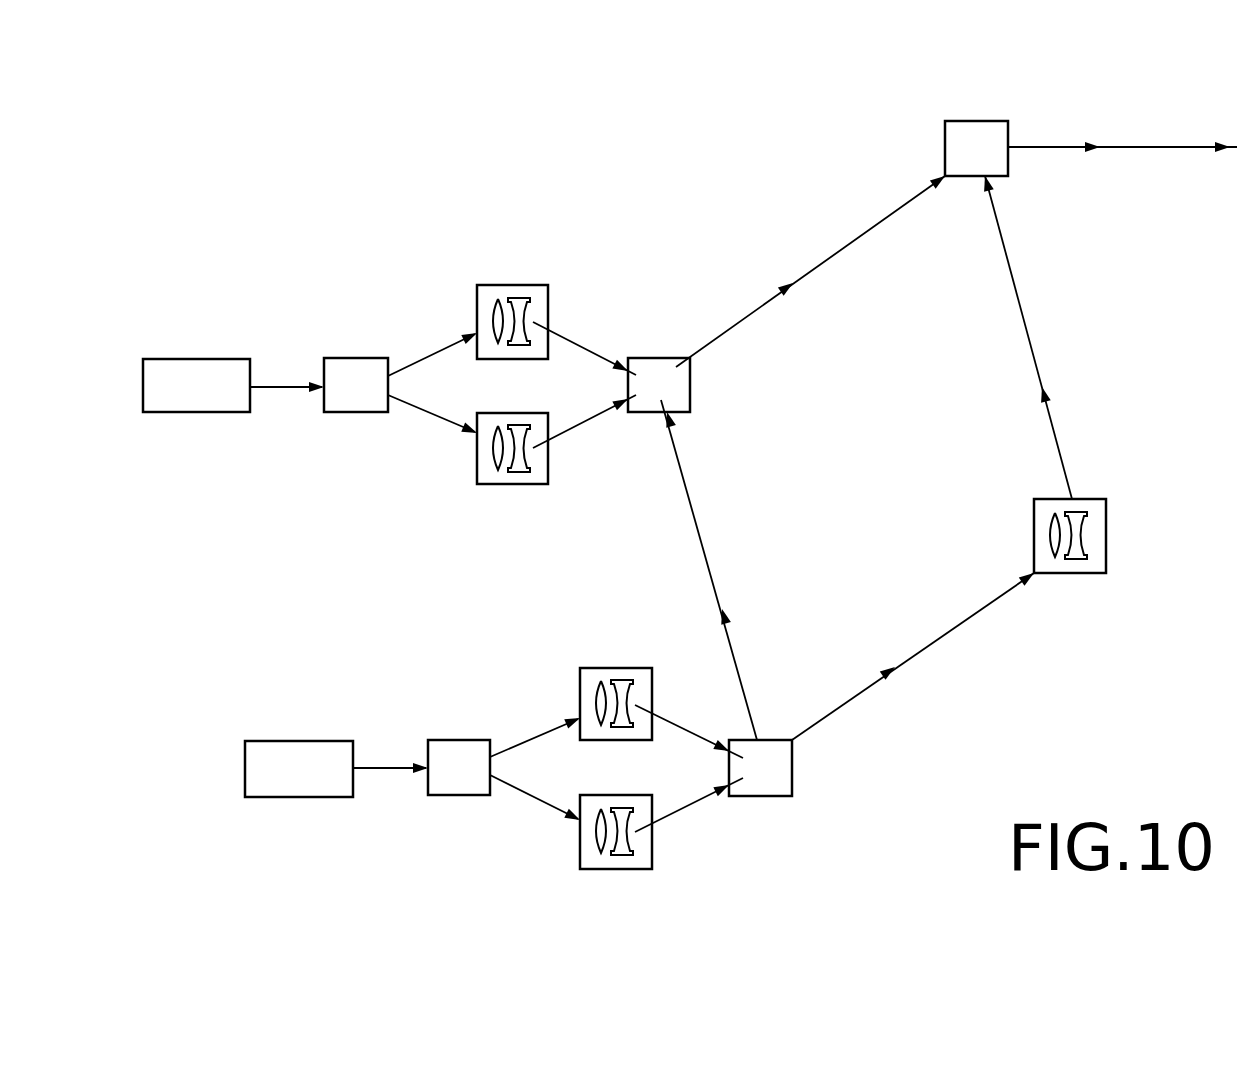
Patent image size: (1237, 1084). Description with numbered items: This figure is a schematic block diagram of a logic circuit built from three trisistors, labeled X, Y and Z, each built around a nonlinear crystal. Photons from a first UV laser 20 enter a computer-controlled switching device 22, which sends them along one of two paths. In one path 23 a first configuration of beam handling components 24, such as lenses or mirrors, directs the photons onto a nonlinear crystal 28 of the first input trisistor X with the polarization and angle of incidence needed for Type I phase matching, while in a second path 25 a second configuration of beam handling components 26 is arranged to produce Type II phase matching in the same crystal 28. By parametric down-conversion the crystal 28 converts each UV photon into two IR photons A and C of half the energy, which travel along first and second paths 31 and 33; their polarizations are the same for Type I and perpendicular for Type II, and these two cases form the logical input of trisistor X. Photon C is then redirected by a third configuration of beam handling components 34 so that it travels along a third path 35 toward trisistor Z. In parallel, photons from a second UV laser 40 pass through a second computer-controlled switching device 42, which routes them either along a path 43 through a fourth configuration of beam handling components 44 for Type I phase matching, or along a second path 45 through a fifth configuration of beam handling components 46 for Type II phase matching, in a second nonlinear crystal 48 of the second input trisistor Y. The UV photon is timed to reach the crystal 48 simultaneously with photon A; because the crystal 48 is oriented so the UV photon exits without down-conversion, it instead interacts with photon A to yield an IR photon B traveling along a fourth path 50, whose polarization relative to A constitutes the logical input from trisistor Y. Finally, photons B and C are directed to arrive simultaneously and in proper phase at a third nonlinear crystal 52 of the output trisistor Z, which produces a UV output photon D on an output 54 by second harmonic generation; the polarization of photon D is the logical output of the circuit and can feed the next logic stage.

The first UV laser 20 is at (300, 797).
The computer-controlled switching device 22 is at (458, 795).
The first path 23 is at (540, 733).
The first configuration of beam handling components 24 is at (620, 668).
The second path 25 is at (535, 798).
The second configuration of beam handling components 26 is at (618, 869).
The nonlinear crystal 28 is at (765, 796).
The first path 31 is at (705, 552).
The second path 33 is at (958, 622).
The third configuration of beam handling components 34 is at (1106, 537).
The third path 35 is at (1021, 309).
The second UV laser 40 is at (195, 412).
The computer-controlled switching device 42 is at (355, 412).
The first path 43 is at (437, 350).
The fourth configuration of beam handling components 44 is at (518, 285).
The second path 45 is at (435, 417).
The fifth configuration of beam handling components 46 is at (515, 484).
The second nonlinear crystal 48 is at (655, 358).
The fourth path 50 is at (838, 249).
The third nonlinear crystal 52 is at (975, 121).
The output 54 is at (1178, 147).